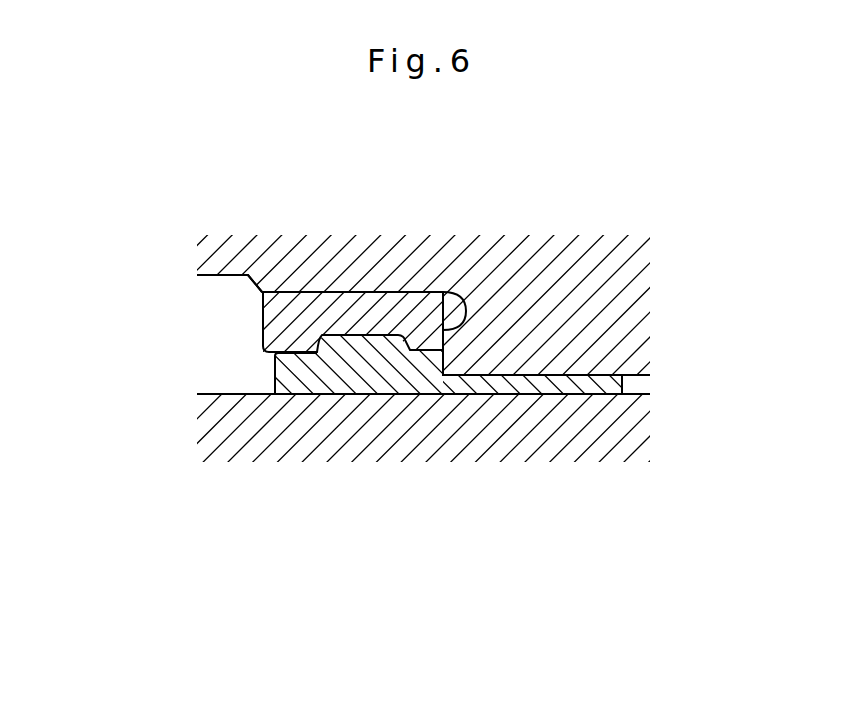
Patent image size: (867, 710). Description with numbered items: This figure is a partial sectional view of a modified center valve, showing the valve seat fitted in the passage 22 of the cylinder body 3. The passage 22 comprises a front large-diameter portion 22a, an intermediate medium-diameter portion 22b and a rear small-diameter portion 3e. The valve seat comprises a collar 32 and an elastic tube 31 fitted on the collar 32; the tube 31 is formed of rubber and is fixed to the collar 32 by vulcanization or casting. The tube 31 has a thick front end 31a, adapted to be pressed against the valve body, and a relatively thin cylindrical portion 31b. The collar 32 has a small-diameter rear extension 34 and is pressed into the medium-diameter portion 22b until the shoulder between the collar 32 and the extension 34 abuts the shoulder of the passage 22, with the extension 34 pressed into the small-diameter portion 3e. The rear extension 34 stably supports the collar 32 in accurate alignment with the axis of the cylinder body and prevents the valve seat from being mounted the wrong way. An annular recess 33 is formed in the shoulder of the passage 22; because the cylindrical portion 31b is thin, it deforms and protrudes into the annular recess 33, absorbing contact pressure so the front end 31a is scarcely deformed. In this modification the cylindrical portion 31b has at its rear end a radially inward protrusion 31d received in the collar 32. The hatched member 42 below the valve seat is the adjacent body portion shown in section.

The cylinder body 3 is at (293, 260).
The rear small-diameter portion 3e is at (527, 383).
The passage 22 is at (247, 345).
The front large-diameter portion 22a is at (237, 275).
The intermediate medium-diameter portion 22b is at (401, 290).
The elastic tube 31 is at (356, 300).
The front end 31a is at (265, 326).
The cylindrical portion 31b is at (427, 310).
The radially inward protrusion 31d is at (422, 348).
The collar 32 is at (390, 373).
The annular recess 33 is at (466, 320).
The rear extension 34 is at (598, 385).
The lower housing 42 is at (250, 432).